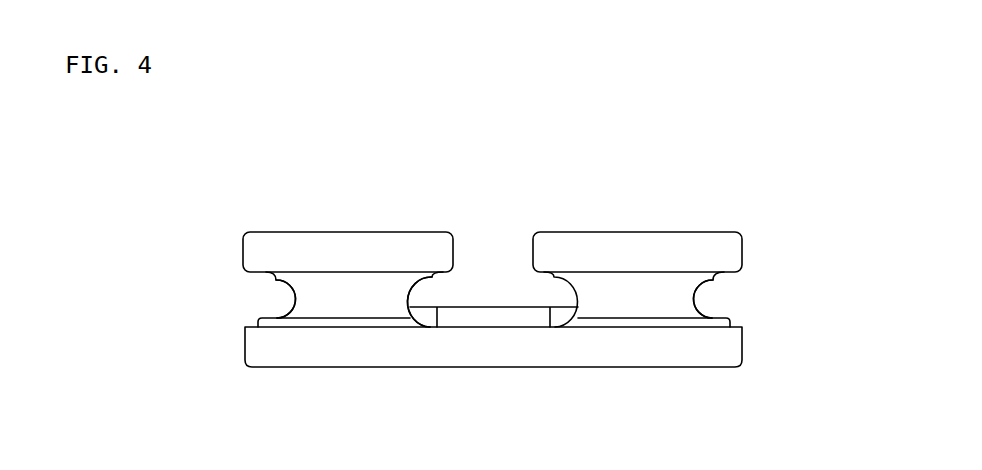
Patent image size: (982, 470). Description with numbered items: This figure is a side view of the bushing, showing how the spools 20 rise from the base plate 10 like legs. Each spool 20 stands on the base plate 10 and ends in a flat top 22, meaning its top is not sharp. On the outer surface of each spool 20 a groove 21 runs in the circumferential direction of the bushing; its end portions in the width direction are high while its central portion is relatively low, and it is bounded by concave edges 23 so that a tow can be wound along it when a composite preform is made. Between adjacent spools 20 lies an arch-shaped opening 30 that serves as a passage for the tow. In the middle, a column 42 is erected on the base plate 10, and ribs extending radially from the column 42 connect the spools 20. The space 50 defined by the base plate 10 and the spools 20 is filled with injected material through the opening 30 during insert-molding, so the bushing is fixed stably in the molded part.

The base plate 10 is at (673, 350).
The spool 20 is at (273, 243).
The groove 21 is at (320, 297).
The flat top 22 is at (681, 236).
The concave edge 23 is at (408, 295).
The opening 30 is at (511, 293).
The column 42 is at (473, 320).
The space 50 is at (511, 253).